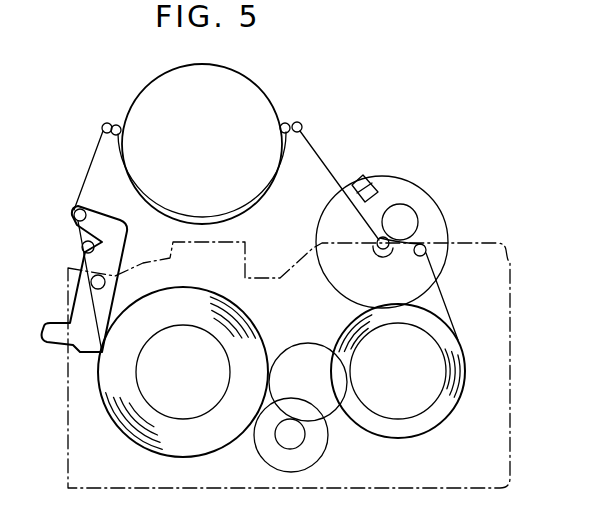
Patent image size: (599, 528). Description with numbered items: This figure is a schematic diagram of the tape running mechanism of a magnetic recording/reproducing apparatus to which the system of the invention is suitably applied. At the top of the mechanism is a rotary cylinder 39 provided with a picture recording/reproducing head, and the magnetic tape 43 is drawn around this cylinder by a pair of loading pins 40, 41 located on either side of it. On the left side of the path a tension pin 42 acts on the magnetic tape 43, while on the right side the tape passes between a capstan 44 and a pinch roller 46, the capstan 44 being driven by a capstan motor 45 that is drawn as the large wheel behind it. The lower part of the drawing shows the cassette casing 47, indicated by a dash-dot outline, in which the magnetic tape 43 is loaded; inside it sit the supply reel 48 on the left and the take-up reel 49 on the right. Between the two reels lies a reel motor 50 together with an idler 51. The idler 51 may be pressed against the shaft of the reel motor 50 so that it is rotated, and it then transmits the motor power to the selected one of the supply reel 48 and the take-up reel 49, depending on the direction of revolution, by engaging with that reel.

The rotary cylinder 39 is at (244, 76).
The loading pin 40 is at (113, 122).
The loading pin 41 is at (289, 122).
The tension pin 42 is at (75, 212).
The magnetic tape 43 is at (325, 150).
The capstan 44 is at (378, 240).
The capstan motor 45 is at (322, 212).
The pinch roller 46 is at (416, 214).
The cassette casing 47 is at (512, 364).
The supply reel 48 is at (202, 407).
The take-up reel 49 is at (410, 407).
The reel motor 50 is at (312, 457).
The idler 51 is at (305, 347).